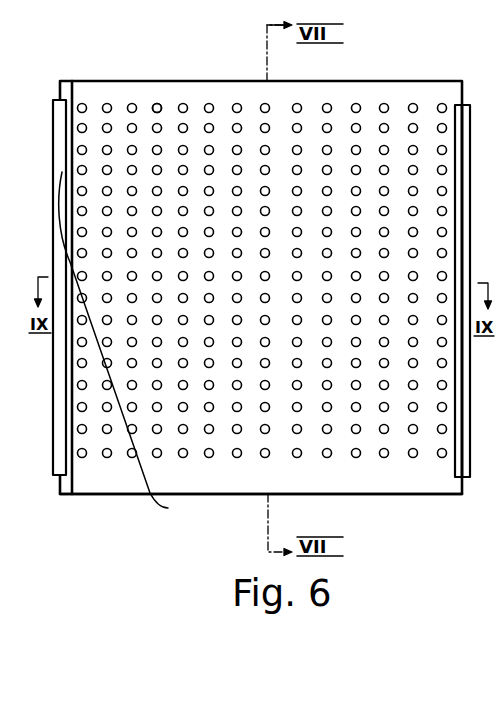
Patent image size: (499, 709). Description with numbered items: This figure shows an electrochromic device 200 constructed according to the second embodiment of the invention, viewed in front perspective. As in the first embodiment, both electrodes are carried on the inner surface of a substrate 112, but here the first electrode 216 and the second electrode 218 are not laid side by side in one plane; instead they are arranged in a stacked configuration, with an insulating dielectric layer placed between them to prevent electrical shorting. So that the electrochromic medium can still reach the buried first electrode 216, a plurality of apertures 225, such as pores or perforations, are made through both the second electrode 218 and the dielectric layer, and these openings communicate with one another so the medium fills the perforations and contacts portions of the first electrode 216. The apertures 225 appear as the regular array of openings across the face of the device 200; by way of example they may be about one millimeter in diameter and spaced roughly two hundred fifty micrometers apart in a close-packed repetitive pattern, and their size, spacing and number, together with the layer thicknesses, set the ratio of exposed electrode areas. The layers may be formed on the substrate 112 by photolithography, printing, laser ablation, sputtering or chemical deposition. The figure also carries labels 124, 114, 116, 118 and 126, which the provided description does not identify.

The electrochromic device 200 is at (423, 55).
The apertures 225 is at (129, 103).
The second electrode 218 is at (138, 97).
The first electrode 216 is at (66, 98).
The right side rail 124 is at (498, 132).
The side member 114 is at (498, 178).
The upper member 116 is at (490, 58).
The lower member 118 is at (497, 450).
The conduit 126 is at (142, 349).
The substrate 112 is at (83, 494).